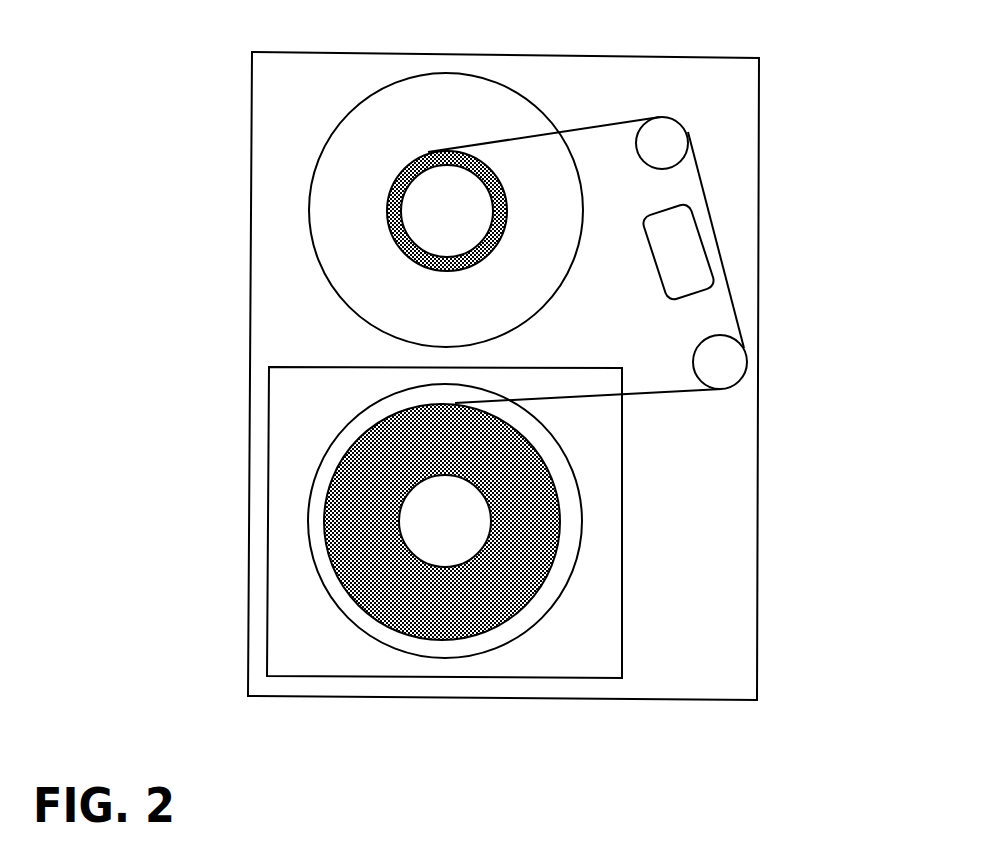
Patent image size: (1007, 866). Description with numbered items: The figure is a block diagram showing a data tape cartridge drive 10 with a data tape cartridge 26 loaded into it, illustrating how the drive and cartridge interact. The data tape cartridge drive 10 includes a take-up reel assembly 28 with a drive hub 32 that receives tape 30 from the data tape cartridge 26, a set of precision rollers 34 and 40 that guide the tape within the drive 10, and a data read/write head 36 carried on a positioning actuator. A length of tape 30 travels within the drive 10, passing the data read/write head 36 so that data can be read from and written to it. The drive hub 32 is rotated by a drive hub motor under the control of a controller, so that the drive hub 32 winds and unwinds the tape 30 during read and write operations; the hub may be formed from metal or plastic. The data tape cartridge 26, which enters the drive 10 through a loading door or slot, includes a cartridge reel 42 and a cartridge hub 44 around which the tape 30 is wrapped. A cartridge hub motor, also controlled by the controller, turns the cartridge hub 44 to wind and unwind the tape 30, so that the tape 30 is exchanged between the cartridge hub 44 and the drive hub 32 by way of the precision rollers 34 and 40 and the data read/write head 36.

The data tape cartridge drive 10 is at (737, 60).
The data tape cartridge 26 is at (307, 598).
The take-up reel assembly 28 is at (368, 132).
The tape 30 is at (392, 185).
The drive hub 32 is at (422, 225).
The precision roller 34 is at (672, 123).
The data read/write head 36 is at (682, 233).
The precision roller 40 is at (730, 348).
The cartridge reel 42 is at (367, 415).
The cartridge hub 44 is at (425, 503).